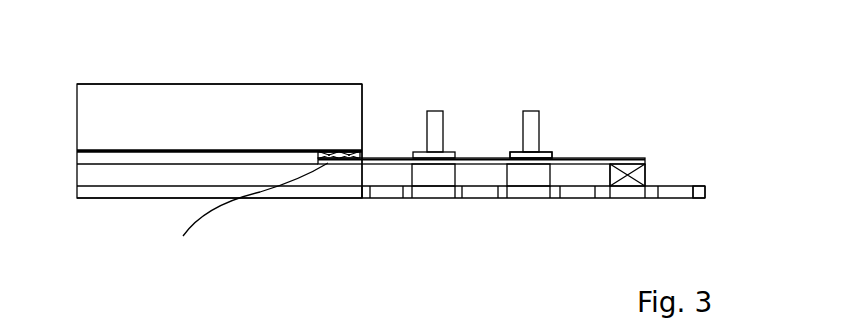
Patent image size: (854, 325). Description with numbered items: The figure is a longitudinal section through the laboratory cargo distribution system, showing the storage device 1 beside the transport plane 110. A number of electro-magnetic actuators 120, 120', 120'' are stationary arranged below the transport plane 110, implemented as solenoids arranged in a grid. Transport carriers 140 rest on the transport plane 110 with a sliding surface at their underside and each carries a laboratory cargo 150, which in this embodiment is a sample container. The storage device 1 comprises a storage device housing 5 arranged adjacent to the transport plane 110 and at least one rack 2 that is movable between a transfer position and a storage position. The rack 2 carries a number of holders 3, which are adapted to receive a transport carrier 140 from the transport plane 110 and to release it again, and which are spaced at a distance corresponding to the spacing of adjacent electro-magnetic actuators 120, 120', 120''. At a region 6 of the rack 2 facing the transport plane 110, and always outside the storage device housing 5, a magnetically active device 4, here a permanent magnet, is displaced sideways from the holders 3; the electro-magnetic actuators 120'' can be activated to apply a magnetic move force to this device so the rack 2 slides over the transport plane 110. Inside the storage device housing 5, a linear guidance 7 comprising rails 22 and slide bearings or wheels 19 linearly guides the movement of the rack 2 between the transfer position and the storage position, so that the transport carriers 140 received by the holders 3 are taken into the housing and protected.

The storage device 1 is at (144, 83).
The storage device housing 5 is at (238, 83).
The rails 22 is at (127, 165).
The linear guidance 7 is at (178, 164).
The rack 2 is at (622, 158).
The slide bearings or wheels 19 is at (355, 158).
The electro-magnetic actuator 120 is at (391, 225).
The electro-magnetic actuator 120' is at (525, 214).
The electro-magnetic actuator 120'' is at (408, 174).
The transport plane 110 is at (698, 187).
The transport carrier 140 is at (415, 155).
The laboratory cargo 150 is at (531, 118).
The holder 3 is at (546, 153).
The magnetically active device 4 is at (631, 171).
The region 6 is at (614, 178).